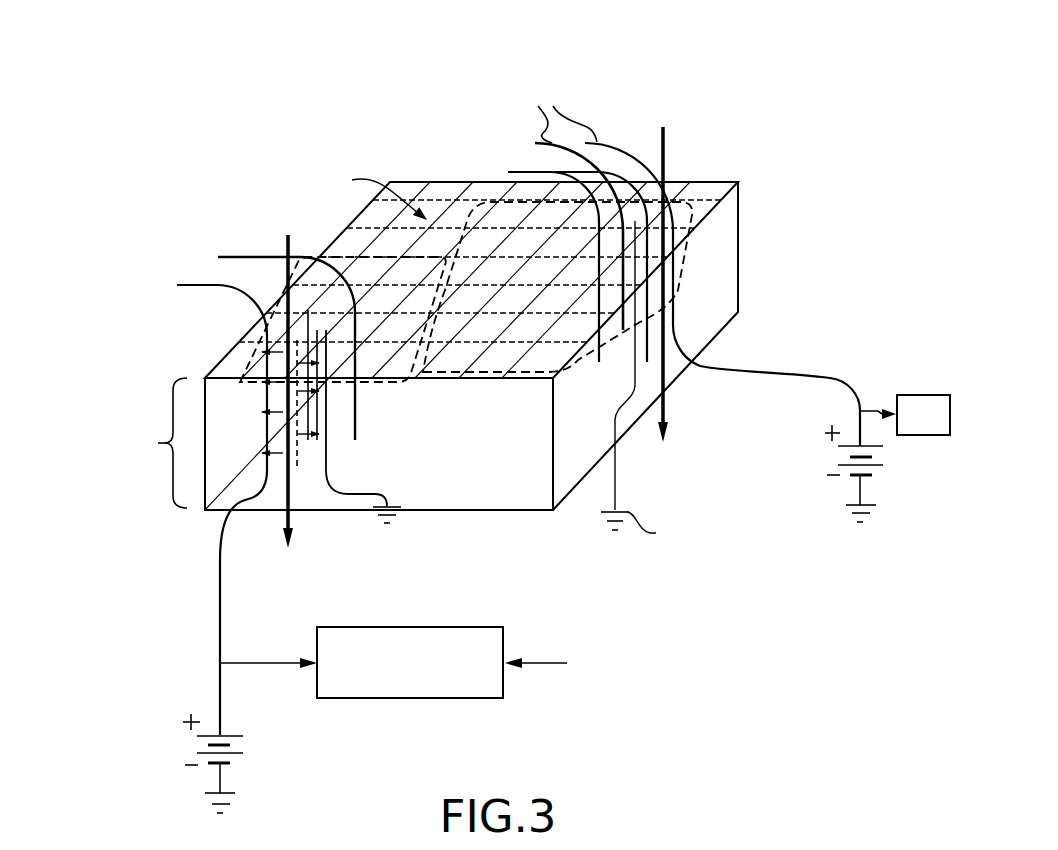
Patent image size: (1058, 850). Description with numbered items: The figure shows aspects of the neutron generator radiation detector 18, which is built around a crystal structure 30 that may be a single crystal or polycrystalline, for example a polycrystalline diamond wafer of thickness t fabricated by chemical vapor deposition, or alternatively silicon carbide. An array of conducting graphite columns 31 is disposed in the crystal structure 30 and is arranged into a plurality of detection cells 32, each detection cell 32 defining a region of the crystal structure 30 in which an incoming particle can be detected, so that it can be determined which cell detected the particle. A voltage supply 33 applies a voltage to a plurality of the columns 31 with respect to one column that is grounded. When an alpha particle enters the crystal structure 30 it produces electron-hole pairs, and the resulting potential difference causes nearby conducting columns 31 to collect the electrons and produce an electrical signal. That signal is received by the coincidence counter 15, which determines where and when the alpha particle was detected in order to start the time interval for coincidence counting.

The neutron generator radiation detector 18 is at (493, 370).
The crystal structure 30 is at (740, 230).
The conducting graphite columns 31 is at (310, 63).
The detection cell 32 is at (383, 352).
The voltage supply 33 is at (903, 498).
The coincidence counter 15 is at (936, 428).